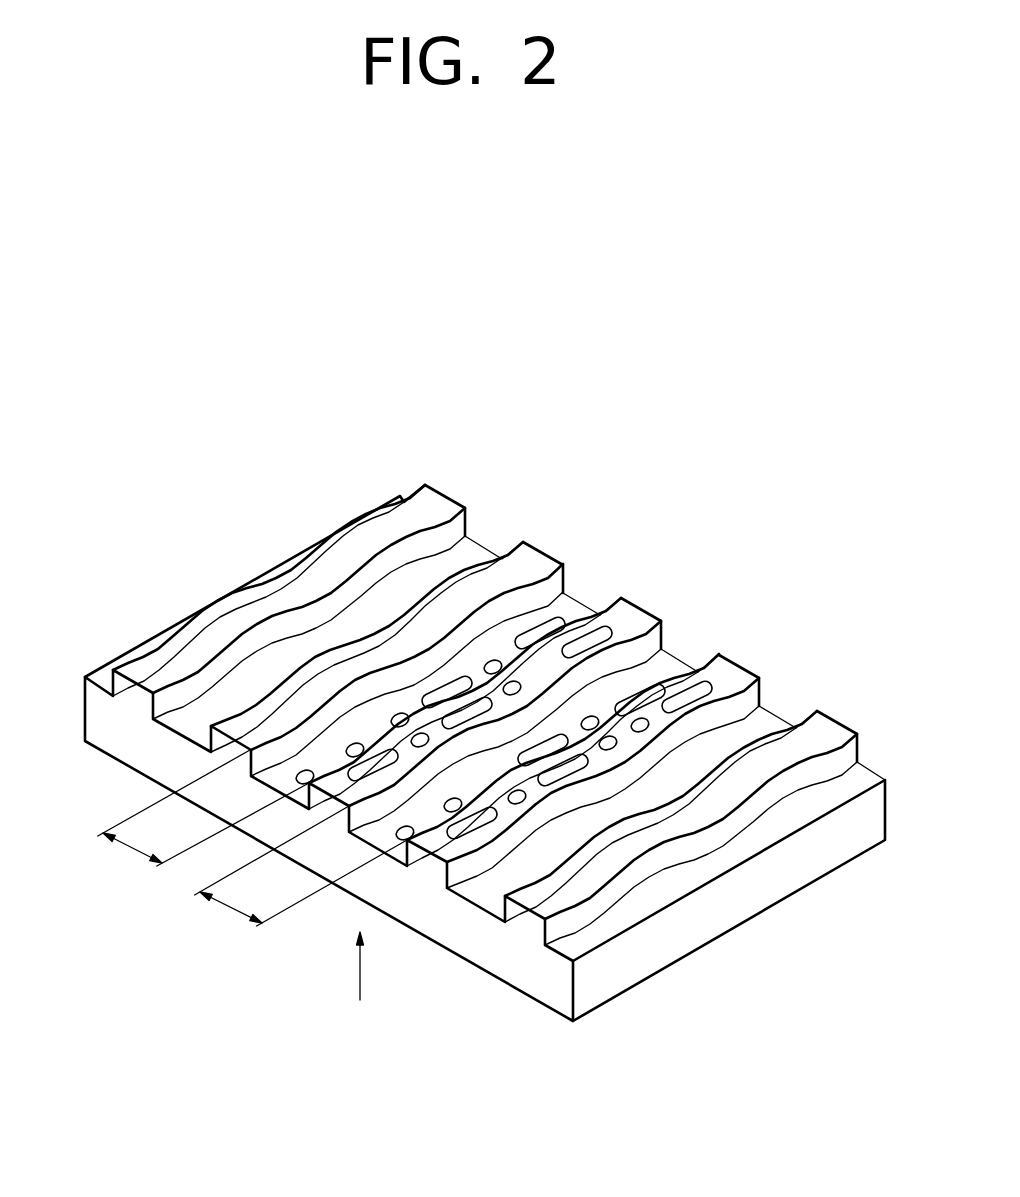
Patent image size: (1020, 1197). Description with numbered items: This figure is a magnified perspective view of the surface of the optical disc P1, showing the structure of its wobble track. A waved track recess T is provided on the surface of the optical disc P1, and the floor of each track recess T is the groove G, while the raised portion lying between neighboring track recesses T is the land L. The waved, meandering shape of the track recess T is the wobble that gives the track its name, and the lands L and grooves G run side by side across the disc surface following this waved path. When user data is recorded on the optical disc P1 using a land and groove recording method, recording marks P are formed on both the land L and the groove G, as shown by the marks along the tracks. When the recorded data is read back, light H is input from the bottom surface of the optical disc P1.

The land L is at (533, 563).
The groove G is at (570, 610).
The recording marks P is at (607, 623).
The track recess T is at (252, 848).
The light H is at (367, 986).
The optical disc P1 is at (703, 922).